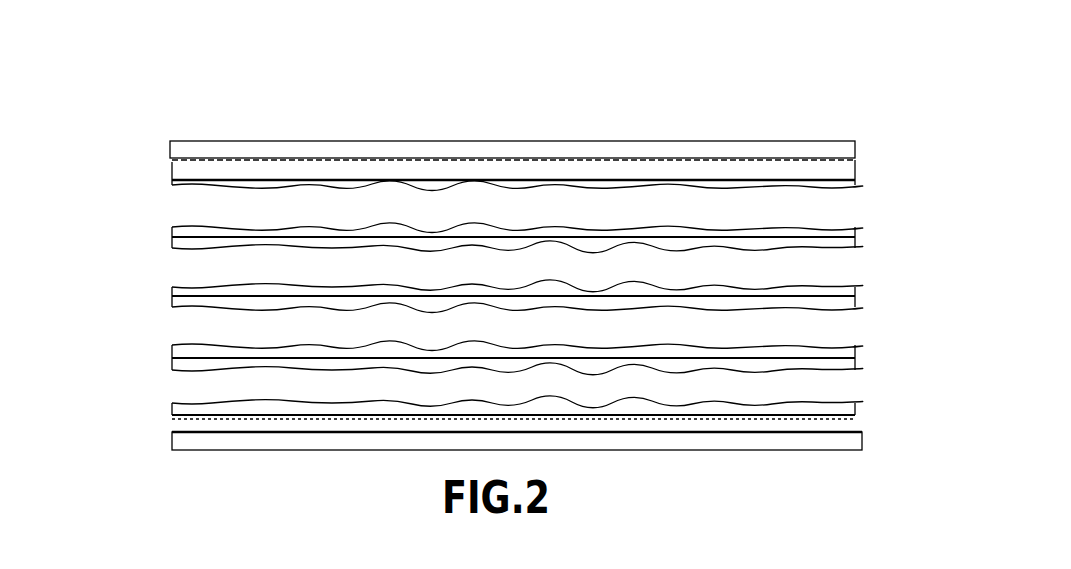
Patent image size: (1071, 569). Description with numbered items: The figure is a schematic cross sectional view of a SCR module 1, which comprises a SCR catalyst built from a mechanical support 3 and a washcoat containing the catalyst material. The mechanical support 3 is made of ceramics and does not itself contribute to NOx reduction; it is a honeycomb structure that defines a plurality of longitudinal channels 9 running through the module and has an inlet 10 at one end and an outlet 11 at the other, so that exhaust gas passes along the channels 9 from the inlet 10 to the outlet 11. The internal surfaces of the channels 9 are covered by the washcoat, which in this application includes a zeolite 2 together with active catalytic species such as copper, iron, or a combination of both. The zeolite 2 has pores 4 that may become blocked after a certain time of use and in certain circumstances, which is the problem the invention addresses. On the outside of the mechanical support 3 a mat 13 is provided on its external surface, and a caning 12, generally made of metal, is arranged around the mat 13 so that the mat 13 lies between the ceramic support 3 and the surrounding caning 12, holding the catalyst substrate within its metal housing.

The SCR module 1 is at (150, 98).
The zeolite 2 is at (347, 290).
The mechanical support 3 is at (722, 237).
The pore 4 is at (500, 0).
The longitudinal channels 9 is at (485, 268).
The inlet 10 is at (865, 188).
The outlet 11 is at (157, 197).
The caning 12 is at (807, 146).
The mat 13 is at (848, 420).